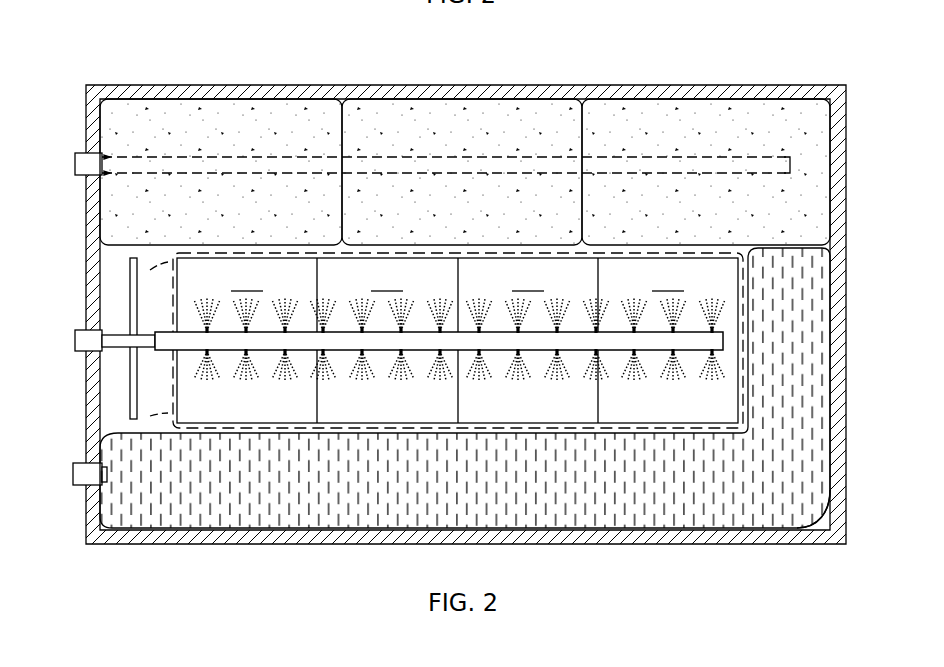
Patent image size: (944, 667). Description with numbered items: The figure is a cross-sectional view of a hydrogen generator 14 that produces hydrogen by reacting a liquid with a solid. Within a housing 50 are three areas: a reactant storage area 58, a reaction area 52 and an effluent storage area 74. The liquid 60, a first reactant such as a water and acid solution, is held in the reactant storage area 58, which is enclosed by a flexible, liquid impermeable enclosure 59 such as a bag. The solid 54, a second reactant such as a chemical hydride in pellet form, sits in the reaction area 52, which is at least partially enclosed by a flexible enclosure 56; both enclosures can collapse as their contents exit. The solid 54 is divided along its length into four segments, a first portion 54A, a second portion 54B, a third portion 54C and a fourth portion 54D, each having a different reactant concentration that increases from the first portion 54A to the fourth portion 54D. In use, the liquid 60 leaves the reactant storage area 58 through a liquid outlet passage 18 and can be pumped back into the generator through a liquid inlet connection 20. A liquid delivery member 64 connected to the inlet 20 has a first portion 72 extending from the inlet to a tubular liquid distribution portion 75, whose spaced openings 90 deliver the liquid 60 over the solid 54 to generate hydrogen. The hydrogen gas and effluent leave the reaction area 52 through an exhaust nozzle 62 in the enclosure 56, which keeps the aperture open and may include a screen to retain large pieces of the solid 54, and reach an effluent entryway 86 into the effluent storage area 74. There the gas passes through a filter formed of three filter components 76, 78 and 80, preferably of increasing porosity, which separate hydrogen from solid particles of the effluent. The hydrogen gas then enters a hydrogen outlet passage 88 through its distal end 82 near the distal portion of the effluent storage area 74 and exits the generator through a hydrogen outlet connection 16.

The hydrogen generator 14 is at (456, 304).
The hydrogen outlet connection 16 is at (78, 165).
The liquid outlet passage 18 is at (78, 472).
The liquid inlet connection 20 is at (80, 338).
The housing 50 is at (775, 85).
The reaction area 52 is at (210, 403).
The solid 54 is at (457, 418).
The first portion 54A is at (247, 280).
The second portion 54B is at (386, 280).
The third portion 54C is at (528, 280).
The fourth portion 54D is at (668, 280).
The enclosure 56 is at (283, 428).
The reactant storage area 58 is at (533, 508).
The enclosure 59 is at (830, 525).
The liquid 60 is at (612, 505).
The exhaust nozzle 62 is at (136, 312).
The liquid delivery member 64 is at (160, 362).
The first portion 72 is at (117, 342).
The effluent storage area 74 is at (160, 118).
The liquid distribution portion 75 is at (383, 344).
The filter component 76 is at (222, 118).
The filter component 78 is at (440, 118).
The filter component 80 is at (680, 118).
The distal end 82 is at (805, 158).
The effluent entryway 86 is at (116, 258).
The hydrogen outlet passage 88 is at (500, 157).
The openings 90 is at (556, 350).